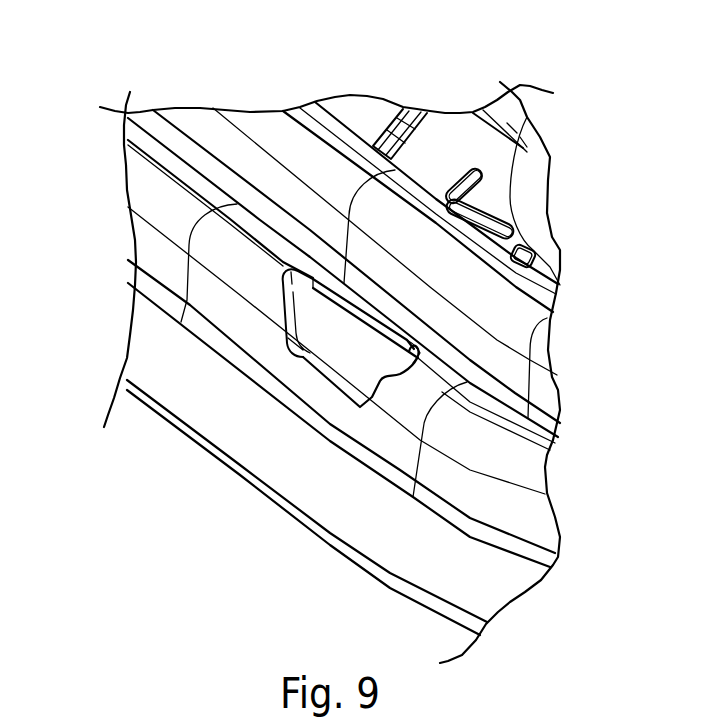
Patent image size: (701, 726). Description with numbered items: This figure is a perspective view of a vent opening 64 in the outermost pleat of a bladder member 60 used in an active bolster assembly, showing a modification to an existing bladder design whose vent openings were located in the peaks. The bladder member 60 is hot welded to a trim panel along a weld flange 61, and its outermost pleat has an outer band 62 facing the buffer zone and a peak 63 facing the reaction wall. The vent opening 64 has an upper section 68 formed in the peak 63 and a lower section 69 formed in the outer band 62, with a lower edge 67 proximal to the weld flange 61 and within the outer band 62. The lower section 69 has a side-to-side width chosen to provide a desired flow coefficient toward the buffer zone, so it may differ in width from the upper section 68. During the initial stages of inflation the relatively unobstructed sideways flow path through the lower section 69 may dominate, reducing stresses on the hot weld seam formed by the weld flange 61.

The bladder member 60 is at (522, 600).
The weld flange 61 is at (218, 427).
The outer band 62 is at (153, 193).
The peak 63 is at (257, 247).
The vent opening 64 is at (362, 352).
The lower edge 67 is at (343, 386).
The upper section 68 is at (410, 357).
The lower section 69 is at (287, 322).